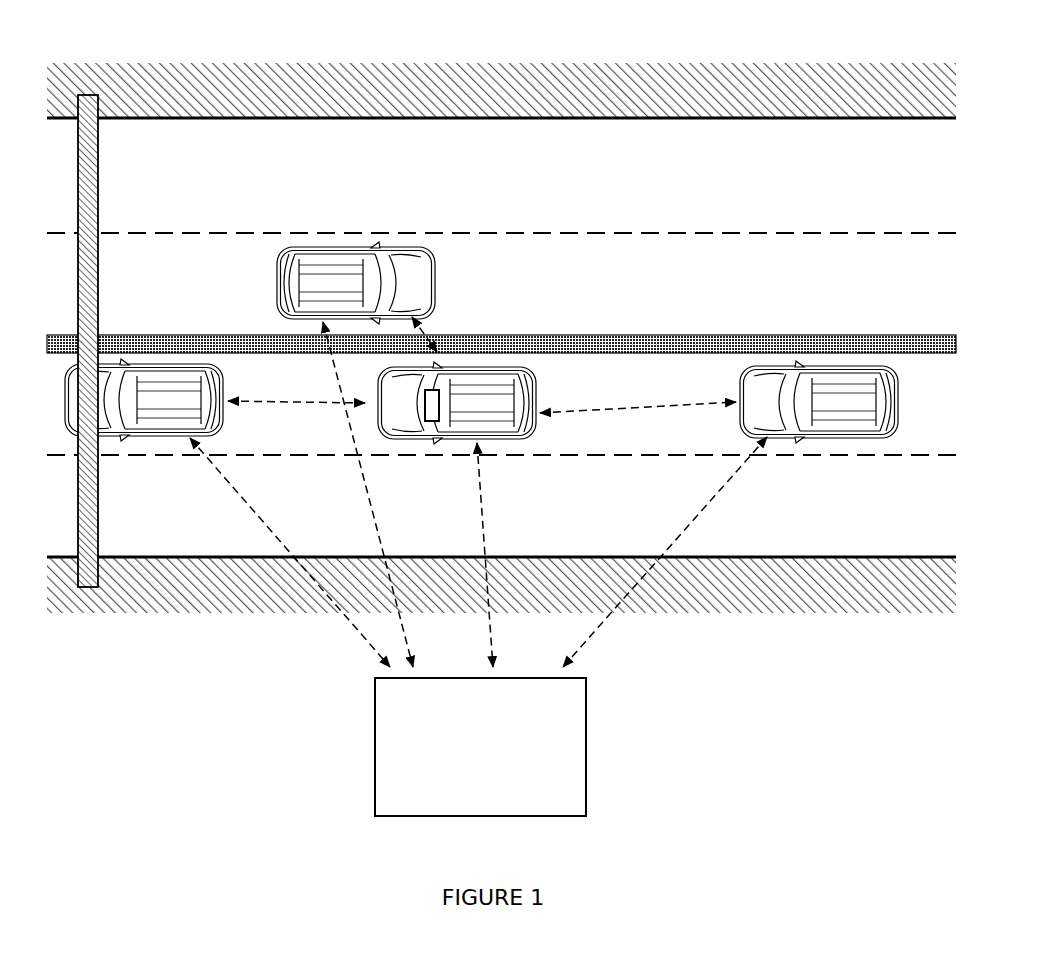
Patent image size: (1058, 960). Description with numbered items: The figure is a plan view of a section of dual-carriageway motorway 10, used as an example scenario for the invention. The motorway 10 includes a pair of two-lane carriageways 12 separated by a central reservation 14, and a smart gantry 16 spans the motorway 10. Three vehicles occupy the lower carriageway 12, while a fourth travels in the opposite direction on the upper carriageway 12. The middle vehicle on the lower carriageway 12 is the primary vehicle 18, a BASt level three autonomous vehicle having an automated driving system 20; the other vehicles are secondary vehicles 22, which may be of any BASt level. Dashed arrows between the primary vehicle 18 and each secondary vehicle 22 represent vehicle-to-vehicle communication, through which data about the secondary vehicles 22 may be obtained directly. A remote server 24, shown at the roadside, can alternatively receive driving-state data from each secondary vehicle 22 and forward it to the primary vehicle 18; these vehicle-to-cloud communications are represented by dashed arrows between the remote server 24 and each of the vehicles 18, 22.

The dual-carriageway motorway 10 is at (833, 630).
The two-lane carriageway 12 is at (655, 140).
The central reservation 14 is at (737, 335).
The smart gantry 16 is at (98, 155).
The primary vehicle 18 is at (468, 380).
The automated driving system 20 is at (433, 422).
The secondary vehicles 22 is at (342, 273).
The remote server 24 is at (393, 782).